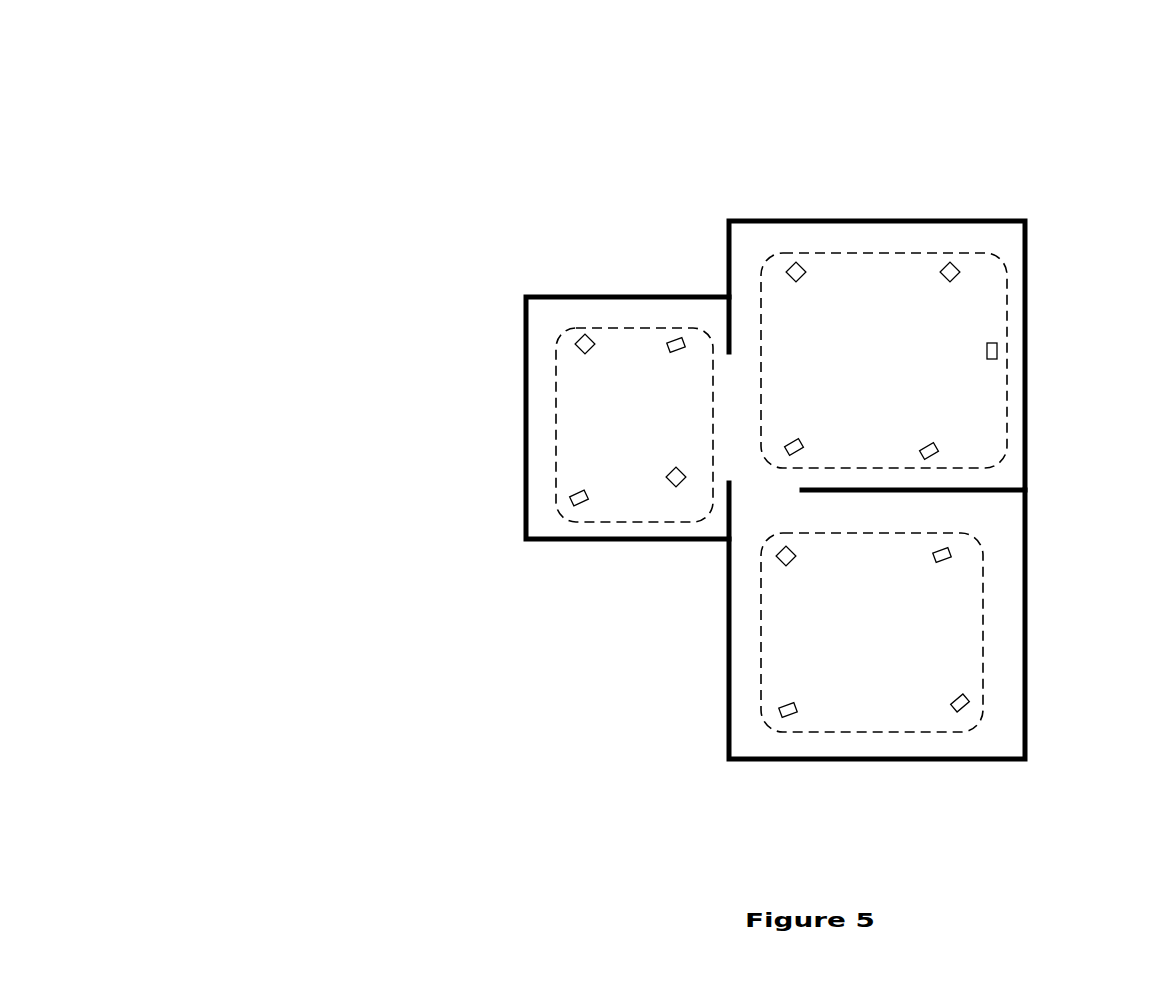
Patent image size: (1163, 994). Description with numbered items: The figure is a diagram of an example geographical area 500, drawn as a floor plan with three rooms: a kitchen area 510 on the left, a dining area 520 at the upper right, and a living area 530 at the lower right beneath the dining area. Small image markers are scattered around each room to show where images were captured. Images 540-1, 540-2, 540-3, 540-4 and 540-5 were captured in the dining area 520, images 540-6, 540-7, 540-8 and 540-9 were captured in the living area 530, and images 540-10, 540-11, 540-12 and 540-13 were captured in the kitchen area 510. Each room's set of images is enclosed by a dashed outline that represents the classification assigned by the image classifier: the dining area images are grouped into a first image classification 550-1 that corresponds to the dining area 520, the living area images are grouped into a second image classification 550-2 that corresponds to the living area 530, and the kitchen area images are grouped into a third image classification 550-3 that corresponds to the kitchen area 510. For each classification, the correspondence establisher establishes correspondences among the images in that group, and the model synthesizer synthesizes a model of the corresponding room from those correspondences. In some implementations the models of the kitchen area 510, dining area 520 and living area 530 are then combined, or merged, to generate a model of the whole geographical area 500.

The geographical area 500 is at (288, 52).
The kitchen area 510 is at (552, 322).
The dining area 520 is at (1010, 240).
The living area 530 is at (1005, 744).
The image 540-1 is at (797, 263).
The image 540-2 is at (958, 274).
The image 540-3 is at (997, 351).
The image 540-4 is at (937, 451).
The image 540-5 is at (798, 441).
The image 540-6 is at (950, 555).
The image 540-7 is at (968, 703).
The image 540-8 is at (780, 711).
The image 540-9 is at (778, 557).
The image 540-10 is at (672, 470).
The image 540-11 is at (571, 497).
The image 540-12 is at (585, 336).
The image 540-13 is at (676, 337).
The first image classification 550-1 is at (906, 252).
The second image classification 550-2 is at (873, 732).
The third image classification 550-3 is at (556, 417).